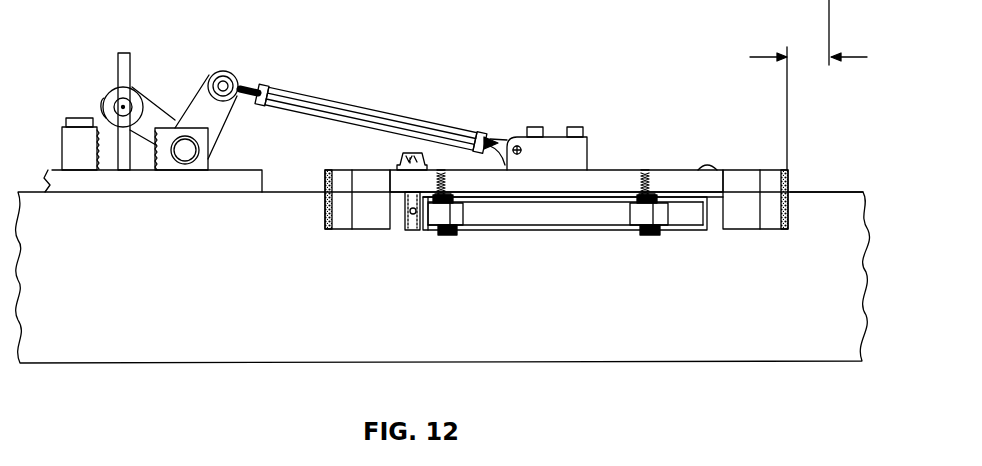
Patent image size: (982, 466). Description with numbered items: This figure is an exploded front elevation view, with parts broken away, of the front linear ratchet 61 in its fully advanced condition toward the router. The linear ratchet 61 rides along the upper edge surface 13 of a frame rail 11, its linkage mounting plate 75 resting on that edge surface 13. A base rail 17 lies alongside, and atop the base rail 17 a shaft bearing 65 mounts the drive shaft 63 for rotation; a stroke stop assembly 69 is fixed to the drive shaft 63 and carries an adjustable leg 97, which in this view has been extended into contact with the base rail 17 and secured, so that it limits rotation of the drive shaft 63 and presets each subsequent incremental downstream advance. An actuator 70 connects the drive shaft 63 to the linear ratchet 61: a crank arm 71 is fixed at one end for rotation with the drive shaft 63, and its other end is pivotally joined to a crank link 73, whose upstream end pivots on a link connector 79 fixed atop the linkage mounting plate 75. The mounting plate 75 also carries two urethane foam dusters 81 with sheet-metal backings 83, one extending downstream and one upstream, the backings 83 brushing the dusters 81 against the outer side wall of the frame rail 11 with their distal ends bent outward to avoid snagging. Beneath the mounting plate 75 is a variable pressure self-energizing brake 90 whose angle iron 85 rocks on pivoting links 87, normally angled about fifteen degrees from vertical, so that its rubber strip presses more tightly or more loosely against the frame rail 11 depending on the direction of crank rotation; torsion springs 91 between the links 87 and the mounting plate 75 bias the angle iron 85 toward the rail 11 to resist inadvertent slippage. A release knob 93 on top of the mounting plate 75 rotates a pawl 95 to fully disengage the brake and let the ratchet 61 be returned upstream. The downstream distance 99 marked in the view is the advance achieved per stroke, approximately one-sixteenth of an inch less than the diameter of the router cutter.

The frame rail 11 is at (753, 335).
The upper edge surface 13 is at (830, 190).
The base rail 17 is at (200, 182).
The linear ratchet 61 is at (550, 93).
The drive shaft 63 is at (193, 163).
The shaft bearing 65 is at (62, 144).
The stroke stop assembly 69 is at (136, 92).
The actuator 70 is at (309, 80).
The crank arm 71 is at (197, 90).
The crank link 73 is at (382, 108).
The linkage mounting plate 75 is at (617, 167).
The link connector 79 is at (588, 143).
The urethane foam duster 81 is at (324, 209).
The sheet-metal backing 83 is at (365, 230).
The angle iron 85 is at (563, 231).
The pivoting link 87 is at (457, 213).
The variable pressure self-energizing brake 90 is at (520, 253).
The torsion spring 91 is at (453, 193).
The release knob 93 is at (400, 157).
The pawl 95 is at (413, 232).
The adjustable leg 97 is at (116, 68).
The downstream distance 99 is at (760, 53).